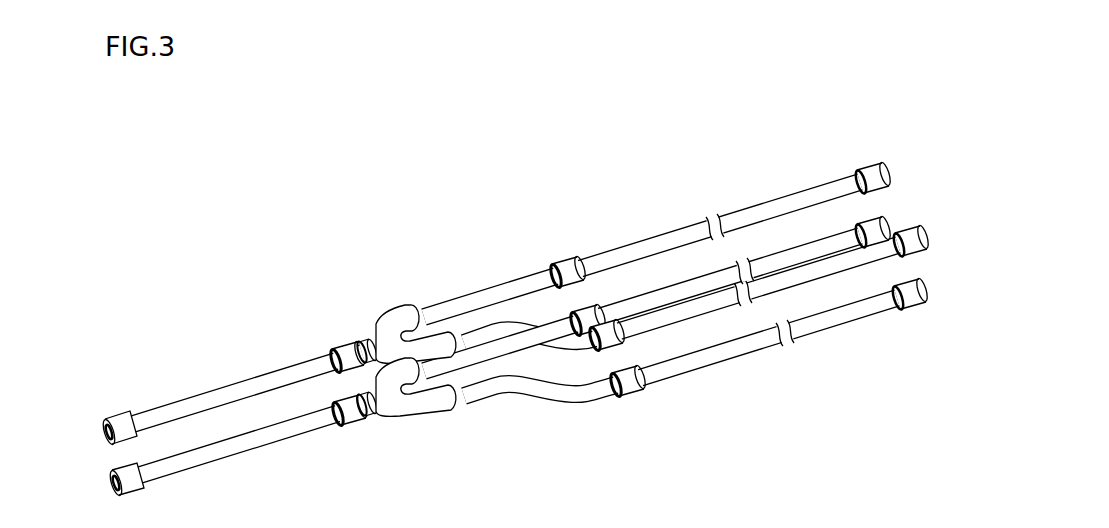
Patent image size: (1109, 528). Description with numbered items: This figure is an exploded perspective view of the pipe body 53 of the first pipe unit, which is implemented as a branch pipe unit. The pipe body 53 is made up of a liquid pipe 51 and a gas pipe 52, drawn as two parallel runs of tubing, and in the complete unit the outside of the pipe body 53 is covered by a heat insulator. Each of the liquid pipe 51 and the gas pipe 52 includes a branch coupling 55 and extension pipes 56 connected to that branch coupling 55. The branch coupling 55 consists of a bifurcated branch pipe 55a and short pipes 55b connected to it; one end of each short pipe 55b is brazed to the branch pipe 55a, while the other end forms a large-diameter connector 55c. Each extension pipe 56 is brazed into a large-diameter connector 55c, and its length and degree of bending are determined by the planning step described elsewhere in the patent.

The liquid pipe 51 is at (538, 428).
The gas pipe 52 is at (484, 260).
The pipe body 53 is at (258, 243).
The branch coupling 55 is at (380, 298).
The bifurcated branch pipe 55a is at (398, 312).
The short pipe 55b is at (362, 340).
The large-diameter connector 55c is at (338, 346).
The extension pipe 56 is at (192, 400).